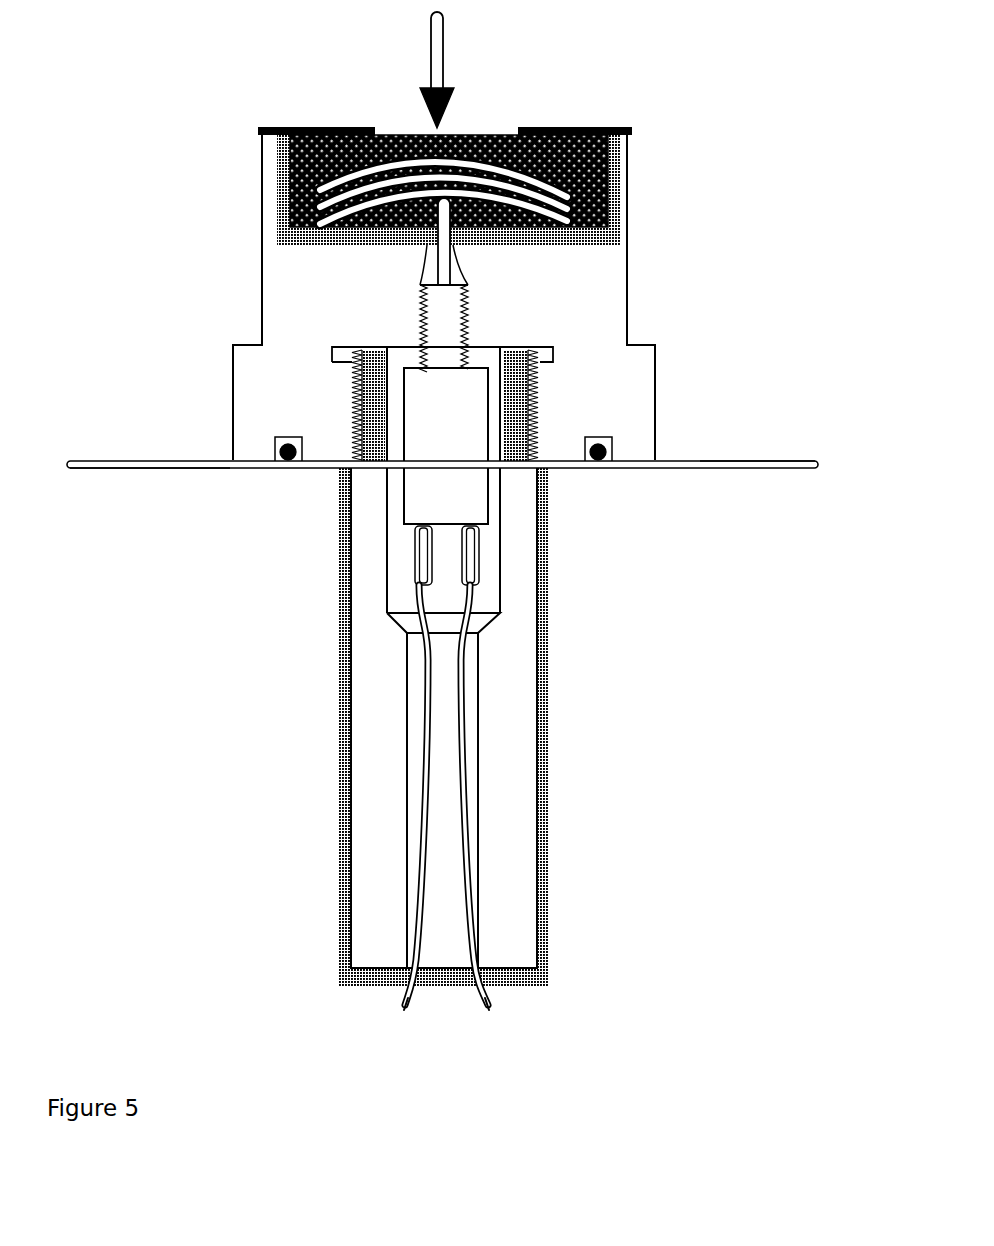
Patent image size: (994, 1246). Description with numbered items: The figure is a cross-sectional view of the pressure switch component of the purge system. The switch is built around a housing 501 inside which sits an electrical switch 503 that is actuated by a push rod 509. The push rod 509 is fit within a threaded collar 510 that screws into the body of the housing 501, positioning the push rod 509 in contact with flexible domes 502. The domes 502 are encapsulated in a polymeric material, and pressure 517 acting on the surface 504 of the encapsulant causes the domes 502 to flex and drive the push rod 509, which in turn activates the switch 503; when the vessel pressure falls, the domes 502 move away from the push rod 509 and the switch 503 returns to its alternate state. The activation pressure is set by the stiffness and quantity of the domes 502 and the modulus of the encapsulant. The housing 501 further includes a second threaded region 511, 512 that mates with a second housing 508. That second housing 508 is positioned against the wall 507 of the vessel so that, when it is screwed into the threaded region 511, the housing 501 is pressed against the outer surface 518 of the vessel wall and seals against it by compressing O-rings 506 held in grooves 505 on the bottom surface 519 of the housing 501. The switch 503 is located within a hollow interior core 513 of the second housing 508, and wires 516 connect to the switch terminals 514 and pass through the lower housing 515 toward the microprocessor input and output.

The housing 501 is at (650, 306).
The flexible domes 502 is at (280, 192).
The electrical switch 503 is at (410, 460).
The surface of the polymeric material 504 is at (505, 118).
The grooves 505 is at (282, 420).
The O-rings 506 is at (625, 443).
The wall of the vessel 507 is at (697, 482).
The second housing 508 is at (335, 722).
The push rod 509 is at (425, 246).
The threaded collar 510 is at (420, 311).
The second threaded region 511 is at (340, 384).
The second threaded region 512 is at (570, 347).
The hollow interior core 513 is at (499, 557).
The switch terminals 514 is at (488, 592).
The lower housing 515 is at (488, 809).
The wires 516 is at (474, 1016).
The pressure 517 is at (406, 63).
The outer surface of the vessel's wall 518 is at (747, 446).
The bottom surface of the first housing 519 is at (255, 470).